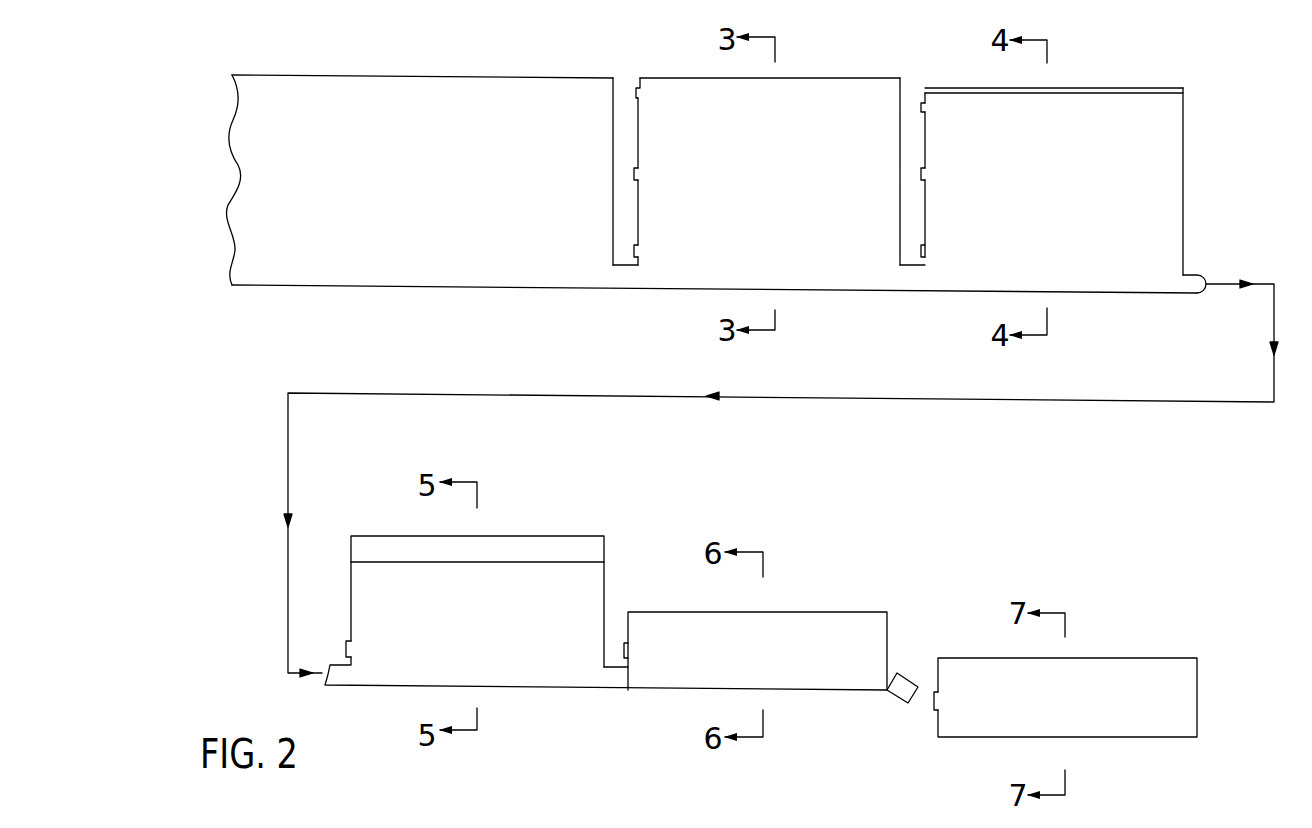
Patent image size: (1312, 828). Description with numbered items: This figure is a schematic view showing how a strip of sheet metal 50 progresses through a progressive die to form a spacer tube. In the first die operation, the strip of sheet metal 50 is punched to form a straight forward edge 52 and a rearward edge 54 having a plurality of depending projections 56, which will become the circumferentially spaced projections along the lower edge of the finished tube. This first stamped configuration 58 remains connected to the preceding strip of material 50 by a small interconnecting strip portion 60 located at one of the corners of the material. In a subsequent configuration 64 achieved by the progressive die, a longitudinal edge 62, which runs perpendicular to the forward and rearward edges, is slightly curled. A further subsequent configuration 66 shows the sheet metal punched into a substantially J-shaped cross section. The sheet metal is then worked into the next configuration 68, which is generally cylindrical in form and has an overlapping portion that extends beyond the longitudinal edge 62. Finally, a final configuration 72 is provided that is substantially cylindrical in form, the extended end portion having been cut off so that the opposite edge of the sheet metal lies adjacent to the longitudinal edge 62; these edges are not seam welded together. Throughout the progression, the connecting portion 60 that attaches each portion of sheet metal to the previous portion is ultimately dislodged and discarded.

The strip of sheet metal 50 is at (438, 96).
The straight forward edge 52 is at (906, 90).
The rearward edge 54 is at (636, 120).
The depending projections 56 is at (636, 90).
The first stamped configuration 58 is at (827, 97).
The interconnecting strip portion 60 is at (623, 275).
The longitudinal edge 62 is at (697, 77).
The subsequent configuration 64 is at (1160, 193).
The subsequent configuration 66 is at (583, 583).
The generally cylindrical configuration 68 is at (848, 625).
The final configuration 72 is at (1146, 680).